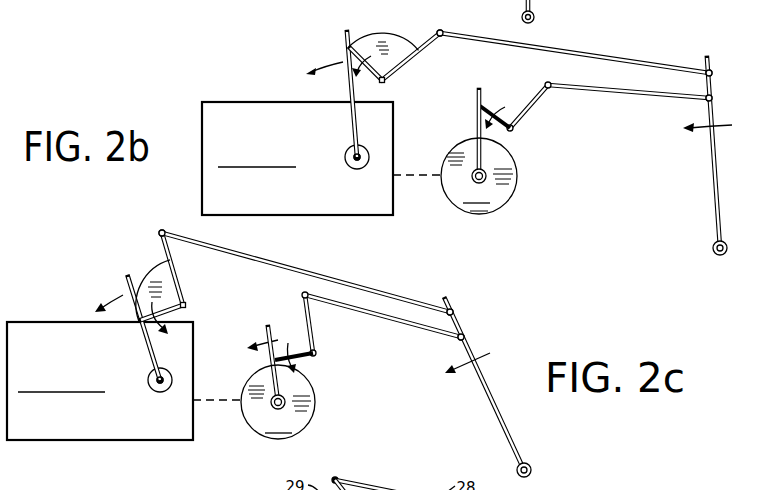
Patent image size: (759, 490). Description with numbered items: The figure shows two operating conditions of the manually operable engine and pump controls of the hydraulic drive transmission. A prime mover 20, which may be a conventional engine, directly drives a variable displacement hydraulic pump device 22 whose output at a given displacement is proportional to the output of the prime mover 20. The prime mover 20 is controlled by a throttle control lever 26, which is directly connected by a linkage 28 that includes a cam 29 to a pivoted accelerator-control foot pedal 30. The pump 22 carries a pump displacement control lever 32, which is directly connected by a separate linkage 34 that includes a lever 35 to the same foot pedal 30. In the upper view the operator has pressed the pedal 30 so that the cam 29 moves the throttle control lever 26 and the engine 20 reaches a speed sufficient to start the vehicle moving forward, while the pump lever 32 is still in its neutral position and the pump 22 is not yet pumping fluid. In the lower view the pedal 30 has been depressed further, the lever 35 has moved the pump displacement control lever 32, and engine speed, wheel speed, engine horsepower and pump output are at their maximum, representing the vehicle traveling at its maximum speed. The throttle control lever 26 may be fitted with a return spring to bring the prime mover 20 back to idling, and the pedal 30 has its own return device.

In FIG. 2b, the prime mover 20 is at (260, 117).
In FIG. 2c, the prime mover 20 is at (55, 335).
In FIG. 2b, the variable displacement hydraulic pump device 22 is at (516, 183).
In FIG. 2c, the variable displacement hydraulic pump device 22 is at (312, 410).
In FIG. 2b, the throttle control lever 26 is at (347, 41).
In FIG. 2c, the throttle control lever 26 is at (127, 284).
In FIG. 2b, the linkage 28 is at (588, 47).
In FIG. 2c, the linkage 28 is at (300, 273).
In FIG. 2b, the cam 29 is at (393, 42).
In FIG. 2c, the cam 29 is at (157, 280).
In FIG. 2b, the accelerator-control foot pedal 30 is at (715, 182).
In FIG. 2c, the accelerator-control foot pedal 30 is at (488, 403).
In FIG. 2b, the pump displacement control lever 32 is at (477, 125).
In FIG. 2c, the pump displacement control lever 32 is at (266, 345).
In FIG. 2b, the linkage 34 is at (622, 89).
In FIG. 2c, the linkage 34 is at (377, 318).
In FIG. 2b, the lever 35 is at (485, 105).
In FIG. 2c, the lever 35 is at (315, 346).